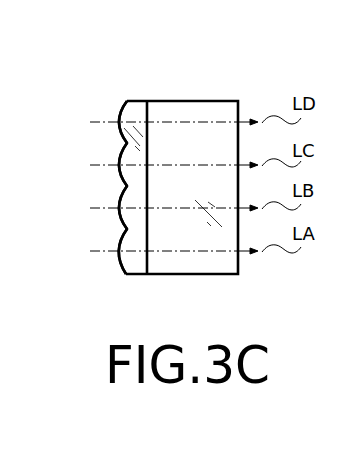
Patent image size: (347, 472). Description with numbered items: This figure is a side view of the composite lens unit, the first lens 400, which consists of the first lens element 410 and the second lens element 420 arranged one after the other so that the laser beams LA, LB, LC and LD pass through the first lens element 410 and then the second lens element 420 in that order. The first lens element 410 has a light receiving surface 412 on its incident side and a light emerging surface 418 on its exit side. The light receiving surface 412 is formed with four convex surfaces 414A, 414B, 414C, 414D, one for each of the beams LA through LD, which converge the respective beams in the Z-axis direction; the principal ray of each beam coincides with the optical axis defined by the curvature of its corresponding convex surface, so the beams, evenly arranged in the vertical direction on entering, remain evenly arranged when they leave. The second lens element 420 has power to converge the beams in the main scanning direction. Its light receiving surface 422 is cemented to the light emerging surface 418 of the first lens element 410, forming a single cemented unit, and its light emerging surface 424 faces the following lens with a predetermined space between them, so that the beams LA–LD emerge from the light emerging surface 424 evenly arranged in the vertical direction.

The first lens 400 is at (222, 61).
The first lens element 410 is at (133, 100).
The light receiving surface 412 is at (122, 262).
The convex surface 414A is at (119, 255).
The convex surface 414B is at (119, 213).
The convex surface 414C is at (119, 170).
The convex surface 414D is at (119, 128).
The light emerging surface 418 is at (149, 243).
The second lens element 420 is at (176, 100).
The light receiving surface 422 is at (146, 110).
The light emerging surface 424 is at (241, 101).